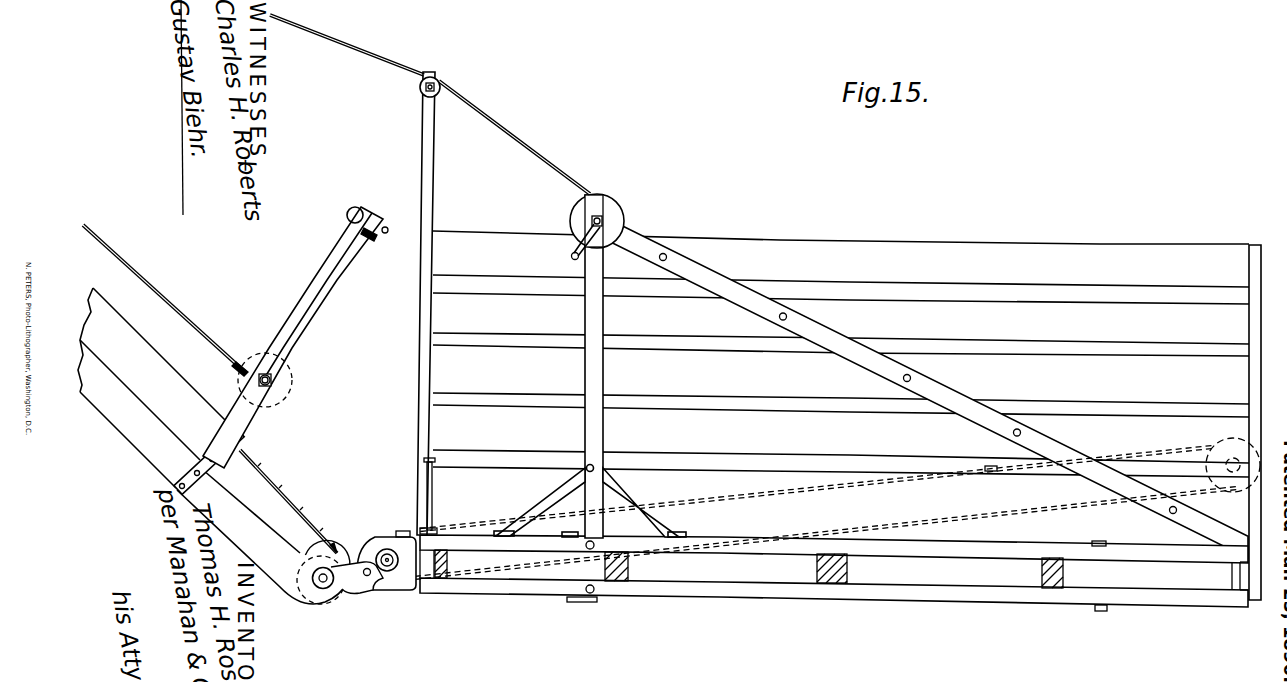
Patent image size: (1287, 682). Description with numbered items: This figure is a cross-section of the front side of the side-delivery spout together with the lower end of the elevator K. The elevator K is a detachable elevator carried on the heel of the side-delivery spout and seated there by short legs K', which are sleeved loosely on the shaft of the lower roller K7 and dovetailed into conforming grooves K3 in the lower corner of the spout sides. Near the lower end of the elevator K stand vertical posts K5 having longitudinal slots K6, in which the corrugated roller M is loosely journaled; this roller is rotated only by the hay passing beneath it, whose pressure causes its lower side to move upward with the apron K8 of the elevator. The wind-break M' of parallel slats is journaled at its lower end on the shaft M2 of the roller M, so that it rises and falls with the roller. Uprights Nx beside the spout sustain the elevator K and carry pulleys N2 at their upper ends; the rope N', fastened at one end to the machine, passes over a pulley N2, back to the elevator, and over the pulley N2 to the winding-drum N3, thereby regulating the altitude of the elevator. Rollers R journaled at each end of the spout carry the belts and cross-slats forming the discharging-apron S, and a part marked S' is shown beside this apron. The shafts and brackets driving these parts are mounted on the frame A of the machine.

The frame A is at (840, 416).
The uprights Nx is at (416, 383).
The rope N' is at (430, 104).
The pulleys N2 is at (436, 96).
The winding-drum N3 is at (624, 219).
The discharging-apron S is at (821, 513).
The rope fastening S' is at (984, 454).
The rollers R is at (1260, 462).
The elevator K is at (158, 388).
The short legs K' is at (321, 589).
The grooves K3 is at (364, 588).
The vertical posts K5 is at (338, 292).
The longitudinal slots K6 is at (336, 274).
The lower roller K7 is at (326, 551).
The apron K8 is at (288, 502).
The corrugated roller M is at (274, 380).
The wind-break M' is at (165, 300).
The shaft M2 is at (270, 386).